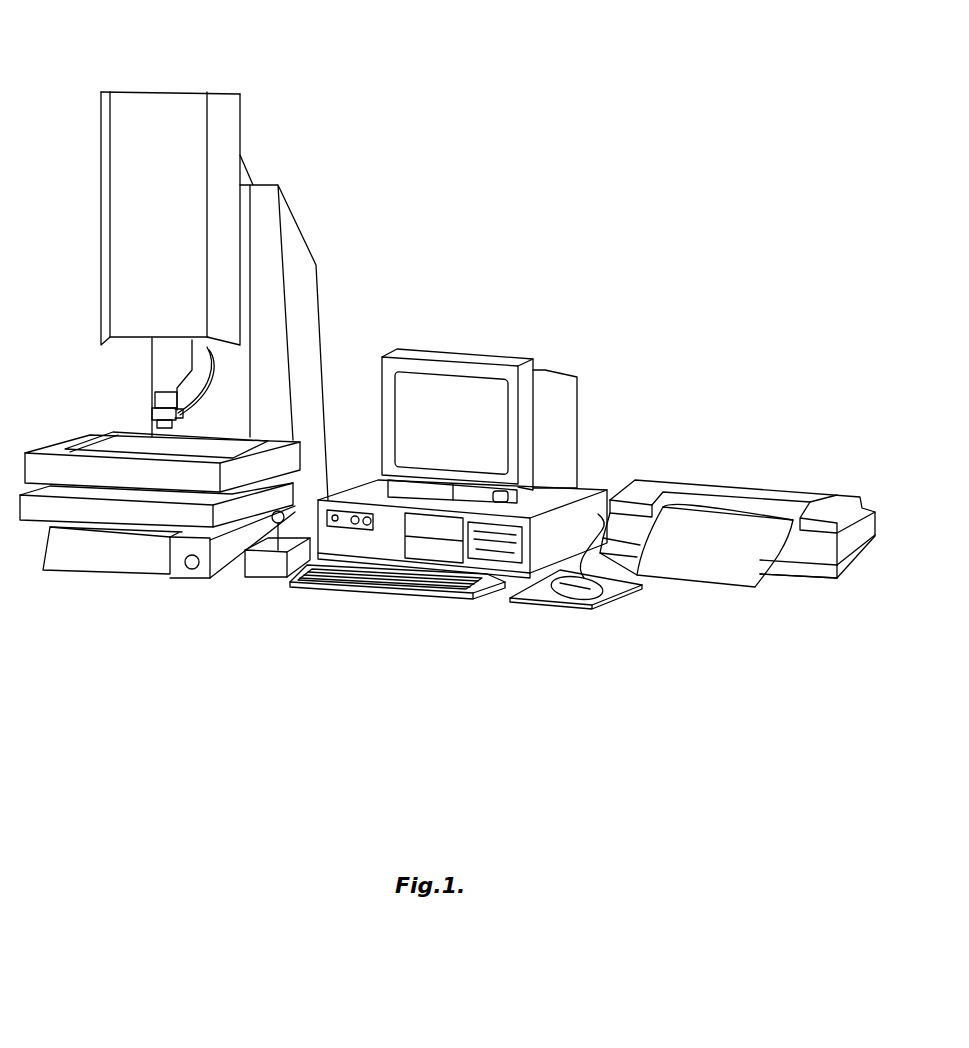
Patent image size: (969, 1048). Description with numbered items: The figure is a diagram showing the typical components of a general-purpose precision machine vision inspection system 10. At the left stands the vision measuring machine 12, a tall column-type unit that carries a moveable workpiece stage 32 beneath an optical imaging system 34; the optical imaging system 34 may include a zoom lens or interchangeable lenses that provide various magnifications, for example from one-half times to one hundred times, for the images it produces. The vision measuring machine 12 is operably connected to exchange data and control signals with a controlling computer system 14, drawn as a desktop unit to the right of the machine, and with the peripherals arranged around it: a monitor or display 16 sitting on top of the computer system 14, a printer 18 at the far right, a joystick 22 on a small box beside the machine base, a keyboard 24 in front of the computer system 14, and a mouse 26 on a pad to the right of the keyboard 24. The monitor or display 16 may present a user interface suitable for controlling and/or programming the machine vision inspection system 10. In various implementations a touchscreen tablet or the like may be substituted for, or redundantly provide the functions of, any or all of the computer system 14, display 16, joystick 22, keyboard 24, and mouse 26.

The machine vision inspection system 10 is at (585, 155).
The vision measuring machine 12 is at (160, 92).
The controlling computer system 14 is at (580, 490).
The monitor or display 16 is at (463, 355).
The printer 18 is at (748, 490).
The joystick 22 is at (263, 578).
The keyboard 24 is at (380, 590).
The mouse 26 is at (590, 582).
The moveable workpiece stage 32 is at (73, 442).
The optical imaging system 34 is at (150, 340).